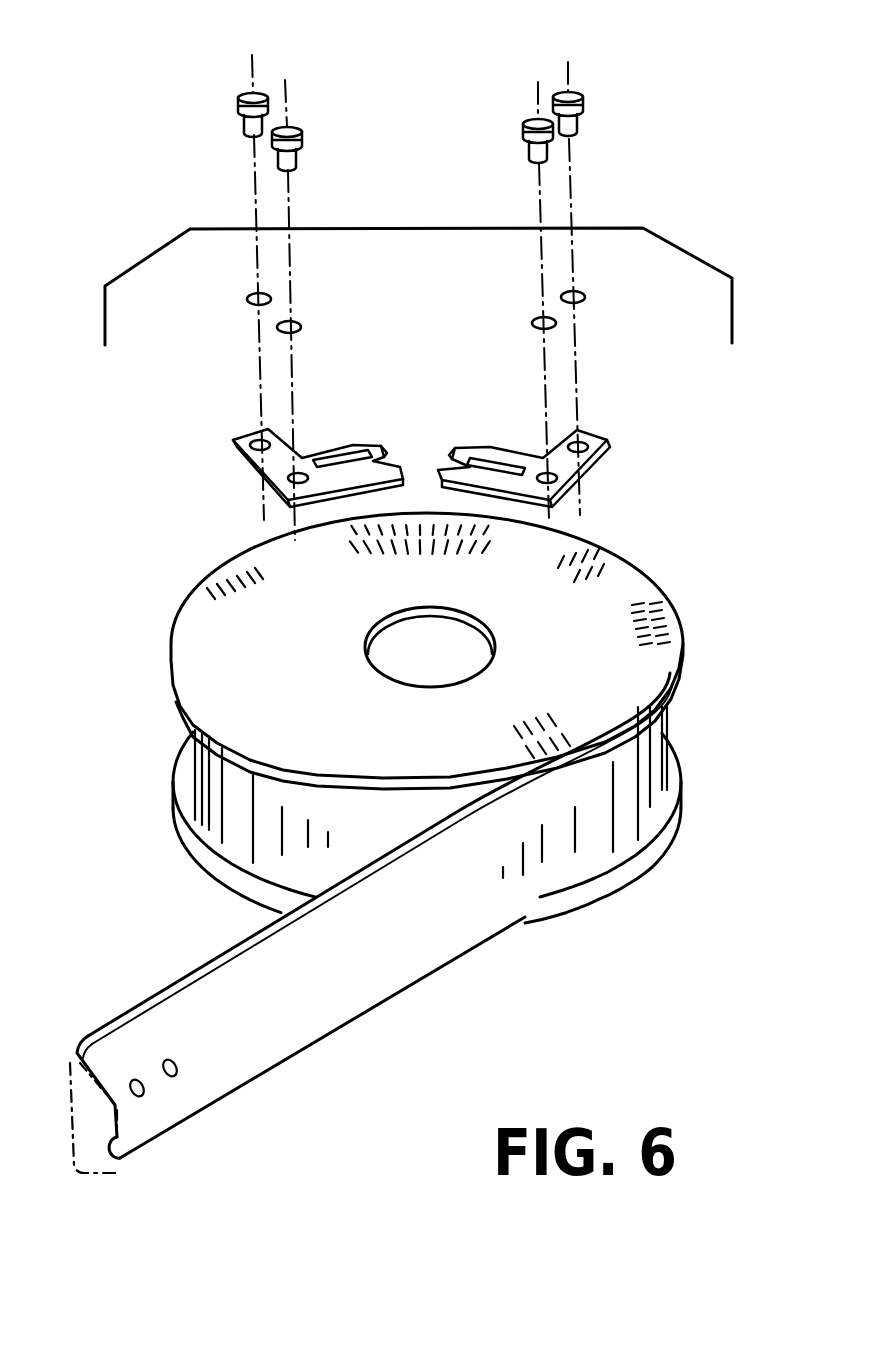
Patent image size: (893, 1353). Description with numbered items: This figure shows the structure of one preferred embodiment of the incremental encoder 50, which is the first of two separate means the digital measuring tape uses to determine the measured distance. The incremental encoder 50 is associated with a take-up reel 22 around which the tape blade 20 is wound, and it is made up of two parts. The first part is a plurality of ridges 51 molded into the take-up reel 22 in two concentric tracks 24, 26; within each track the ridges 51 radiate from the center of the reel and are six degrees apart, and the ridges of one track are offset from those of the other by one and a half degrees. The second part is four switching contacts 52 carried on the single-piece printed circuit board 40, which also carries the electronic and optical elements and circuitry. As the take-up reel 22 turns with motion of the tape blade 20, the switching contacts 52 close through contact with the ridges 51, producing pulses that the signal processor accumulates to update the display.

The tape blade 20 is at (334, 1005).
The take-up reel 22 is at (623, 580).
The first concentric track 24 is at (665, 700).
The second concentric track 26 is at (645, 648).
The printed circuit board 40 is at (653, 315).
The incremental encoder 50 is at (390, 518).
The ridges 51 is at (650, 628).
The switching contacts 52 is at (468, 449).